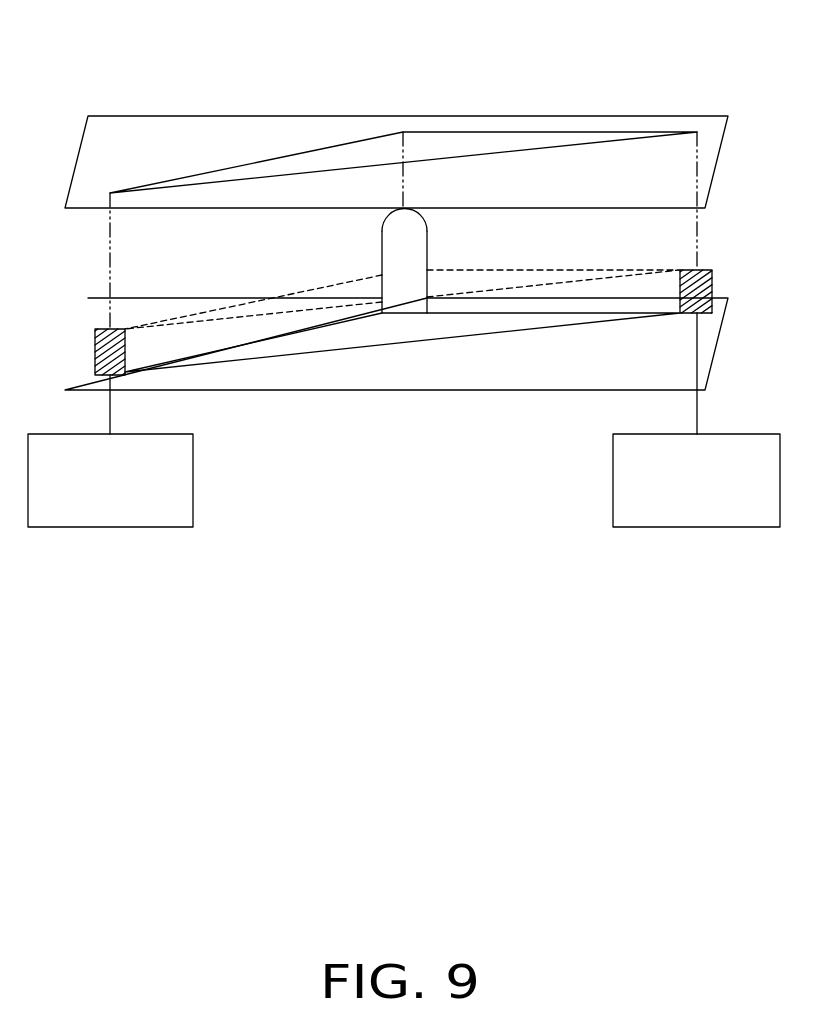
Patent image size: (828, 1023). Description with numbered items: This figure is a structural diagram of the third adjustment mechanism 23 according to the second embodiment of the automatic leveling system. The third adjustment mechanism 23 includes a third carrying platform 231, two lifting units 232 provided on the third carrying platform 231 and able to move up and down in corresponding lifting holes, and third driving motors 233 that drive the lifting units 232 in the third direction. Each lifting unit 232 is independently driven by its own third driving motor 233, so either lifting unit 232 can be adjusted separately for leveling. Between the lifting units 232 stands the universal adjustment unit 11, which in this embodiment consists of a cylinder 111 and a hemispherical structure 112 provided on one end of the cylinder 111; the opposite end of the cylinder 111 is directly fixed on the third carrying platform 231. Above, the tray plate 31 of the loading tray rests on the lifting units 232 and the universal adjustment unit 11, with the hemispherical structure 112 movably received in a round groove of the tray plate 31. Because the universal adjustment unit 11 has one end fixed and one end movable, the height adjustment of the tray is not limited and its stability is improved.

The tray plate 31 is at (160, 138).
The universal adjustment unit 11 is at (373, 355).
The cylinder 111 is at (395, 300).
The hemispherical structure 112 is at (403, 226).
The third adjustment mechanism 23 is at (404, 451).
The third carrying platform 231 is at (505, 347).
The lifting unit 232 is at (680, 292).
The third driving motor 233 is at (330, 480).